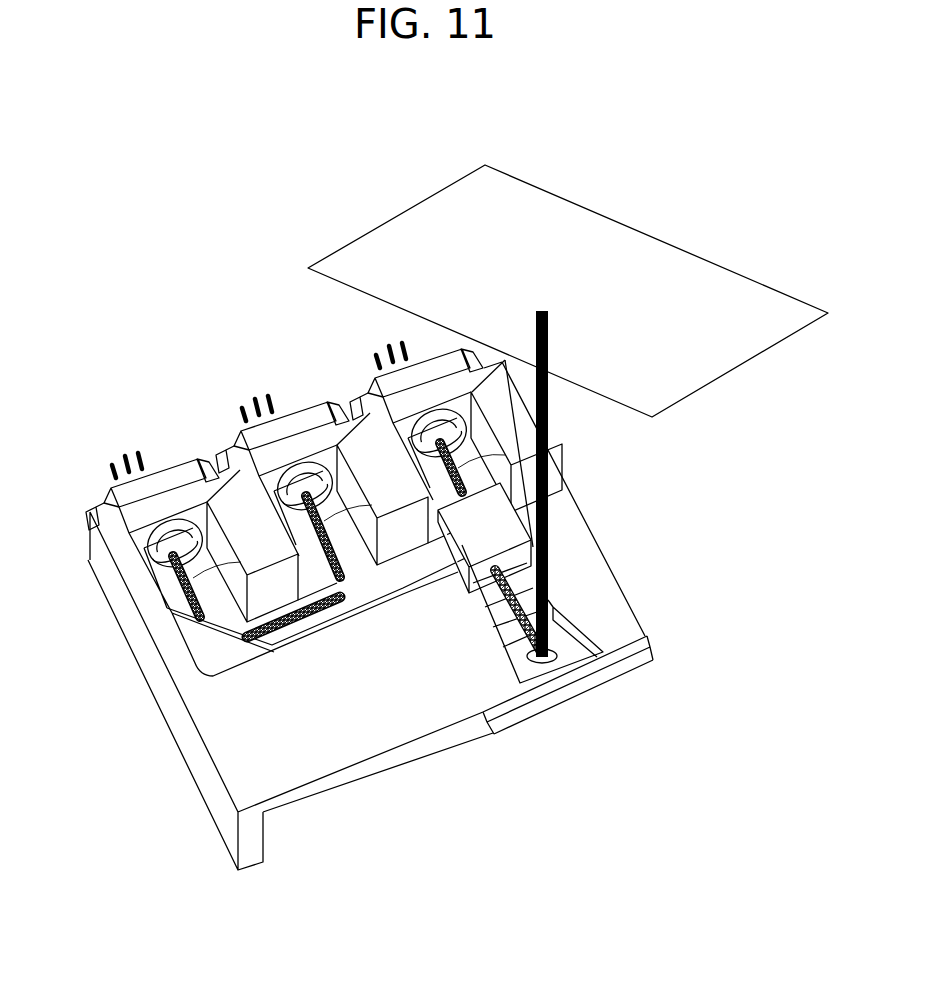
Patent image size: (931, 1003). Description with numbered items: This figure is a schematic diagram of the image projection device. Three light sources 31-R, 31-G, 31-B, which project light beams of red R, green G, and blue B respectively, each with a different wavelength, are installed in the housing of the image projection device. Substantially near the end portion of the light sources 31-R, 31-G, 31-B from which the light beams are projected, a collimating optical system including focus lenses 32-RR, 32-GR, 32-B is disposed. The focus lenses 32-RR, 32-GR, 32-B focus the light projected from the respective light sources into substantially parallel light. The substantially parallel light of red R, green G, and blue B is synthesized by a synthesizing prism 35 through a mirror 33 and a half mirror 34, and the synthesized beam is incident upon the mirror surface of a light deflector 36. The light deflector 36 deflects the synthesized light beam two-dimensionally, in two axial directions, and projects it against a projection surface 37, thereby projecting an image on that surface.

The light source 31-R is at (110, 468).
The light source 31-G is at (247, 412).
The light source 31-B is at (377, 358).
The focus lens 32-RR is at (88, 512).
The focus lens 32-GR is at (222, 455).
The focus lens 32-B is at (362, 398).
The red R is at (239, 560).
The green G is at (372, 508).
The blue B is at (505, 455).
The mirror 33 is at (230, 658).
The half mirror 34 is at (362, 603).
The synthesizing prism 35 is at (480, 553).
The light deflector 36 is at (592, 628).
The projection surface 37 is at (633, 237).